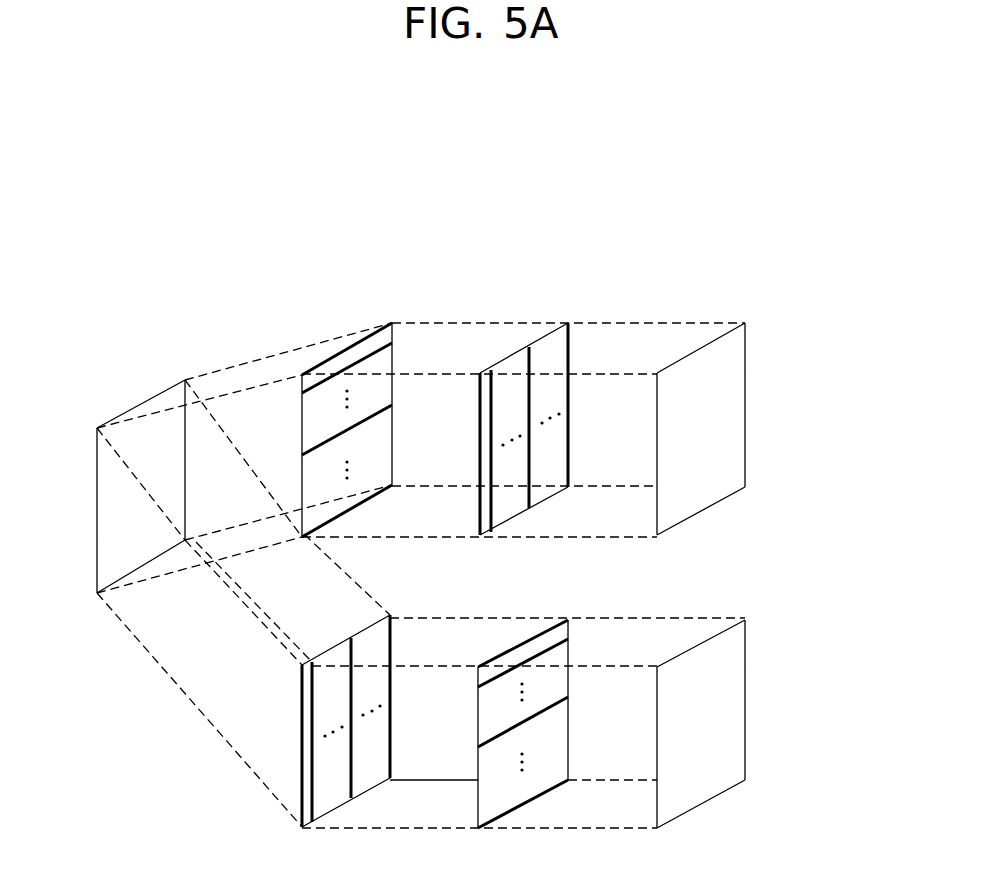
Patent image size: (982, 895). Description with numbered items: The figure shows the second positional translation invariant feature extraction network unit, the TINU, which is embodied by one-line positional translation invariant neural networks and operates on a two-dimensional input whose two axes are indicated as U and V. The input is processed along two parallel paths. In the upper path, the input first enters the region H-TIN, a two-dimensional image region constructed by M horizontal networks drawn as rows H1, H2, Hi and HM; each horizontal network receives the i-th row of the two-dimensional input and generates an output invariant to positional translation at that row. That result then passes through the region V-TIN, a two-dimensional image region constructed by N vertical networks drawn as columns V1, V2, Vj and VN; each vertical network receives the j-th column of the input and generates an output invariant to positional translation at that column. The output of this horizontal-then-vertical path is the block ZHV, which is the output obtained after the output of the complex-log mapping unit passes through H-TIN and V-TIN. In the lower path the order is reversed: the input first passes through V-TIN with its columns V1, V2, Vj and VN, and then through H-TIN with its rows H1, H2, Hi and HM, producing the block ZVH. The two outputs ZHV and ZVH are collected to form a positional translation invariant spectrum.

The second positional translation invariant feature extraction network unit TINU is at (590, 240).
The input data block U is at (184, 484).
The input data block V is at (288, 431).
The element H-TIN is at (452, 580).
The element V-TIN is at (426, 580).
The horizontal network H1 is at (450, 480).
The horizontal network H2 is at (450, 510).
The horizontal network Hi is at (448, 569).
The horizontal network HM is at (452, 643).
The vertical network V1 is at (383, 586).
The vertical network V2 is at (401, 577).
The vertical network Vj is at (431, 559).
The vertical network VN is at (474, 536).
The output Z_HV ZHV is at (701, 451).
The output Z_VH ZVH is at (701, 746).